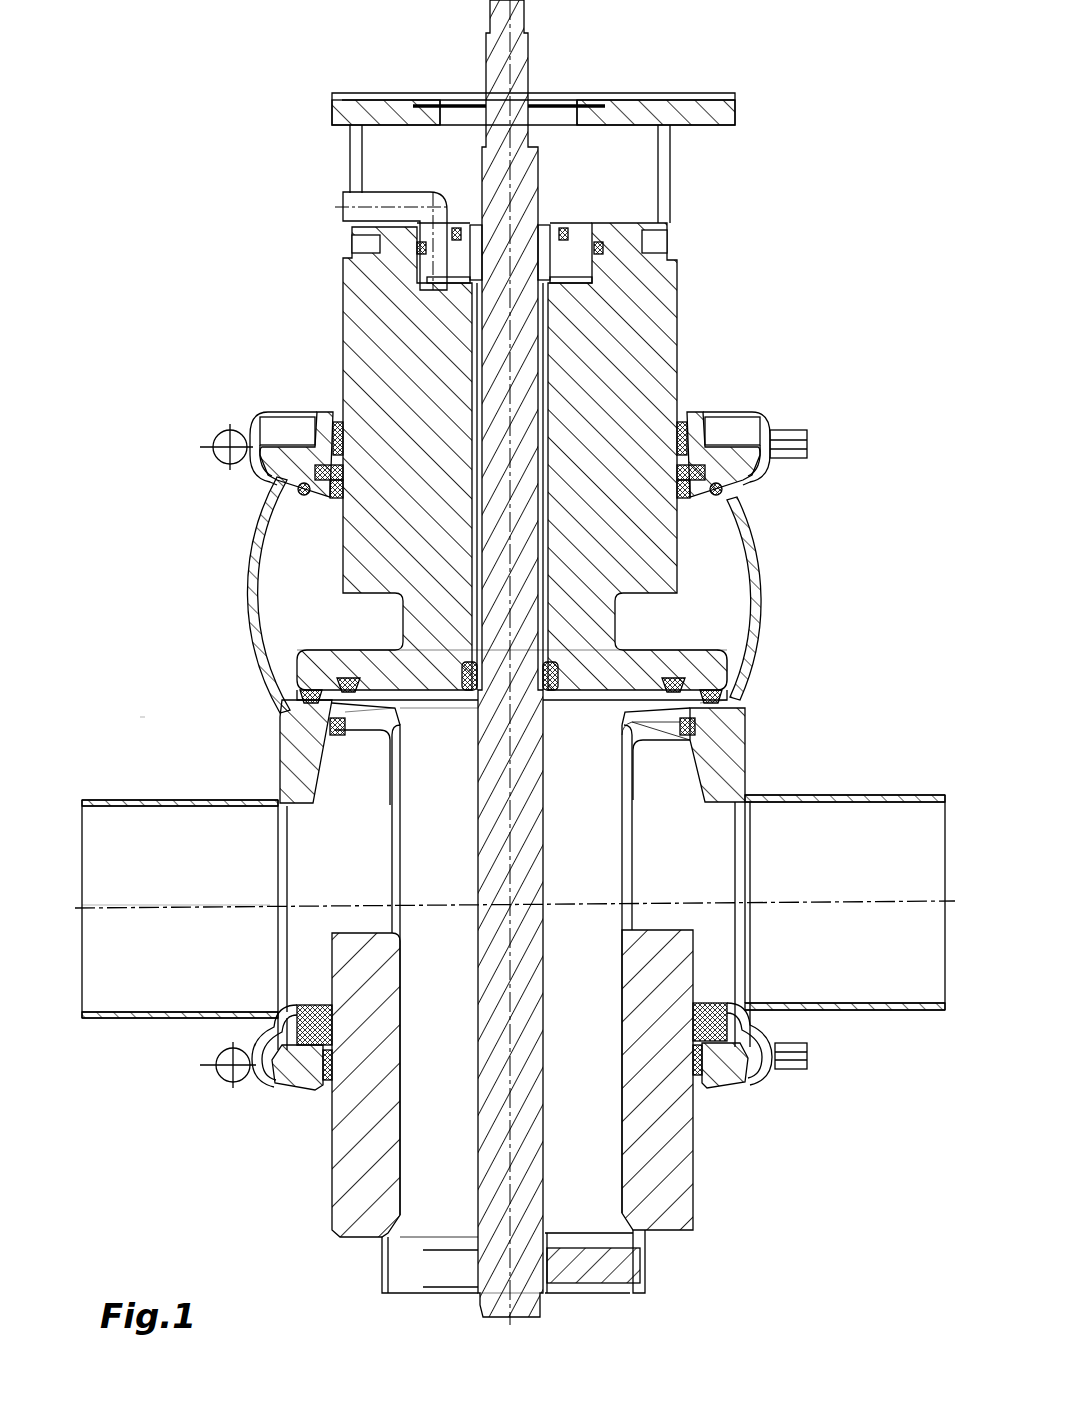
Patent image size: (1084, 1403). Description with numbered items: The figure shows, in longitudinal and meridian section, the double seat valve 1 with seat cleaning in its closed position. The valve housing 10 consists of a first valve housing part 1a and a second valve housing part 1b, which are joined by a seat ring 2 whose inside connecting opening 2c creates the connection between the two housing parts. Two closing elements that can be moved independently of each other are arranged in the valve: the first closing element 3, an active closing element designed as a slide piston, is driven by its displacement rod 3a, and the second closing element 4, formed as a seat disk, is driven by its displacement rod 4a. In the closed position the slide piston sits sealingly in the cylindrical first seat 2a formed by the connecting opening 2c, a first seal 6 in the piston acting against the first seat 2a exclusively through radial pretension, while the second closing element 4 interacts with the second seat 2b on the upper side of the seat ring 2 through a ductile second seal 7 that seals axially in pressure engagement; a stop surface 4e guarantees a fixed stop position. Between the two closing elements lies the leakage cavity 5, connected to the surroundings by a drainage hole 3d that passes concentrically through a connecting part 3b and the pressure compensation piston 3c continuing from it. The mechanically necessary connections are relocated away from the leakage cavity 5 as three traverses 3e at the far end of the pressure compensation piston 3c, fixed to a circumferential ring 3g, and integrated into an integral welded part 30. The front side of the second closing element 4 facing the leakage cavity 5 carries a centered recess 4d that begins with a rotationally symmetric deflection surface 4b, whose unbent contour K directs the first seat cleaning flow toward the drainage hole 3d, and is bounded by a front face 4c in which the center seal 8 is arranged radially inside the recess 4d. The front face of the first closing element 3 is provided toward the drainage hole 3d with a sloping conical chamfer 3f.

The double seat valve 1 is at (140, 716).
The first valve housing part 1a is at (282, 955).
The second valve housing part 1b is at (262, 538).
The seat ring 2 is at (303, 748).
The first seat 2a is at (340, 723).
The second seat 2b is at (735, 668).
The connecting opening 2c is at (661, 770).
The first closing element 3 is at (712, 760).
The displacement rod 3a is at (510, 358).
The connecting part 3b is at (397, 853).
The pressure compensation piston 3c is at (362, 1122).
The drainage hole 3d is at (439, 1156).
The traverses 3e is at (587, 1263).
The sloping conical chamfer 3f is at (662, 727).
The circumferential ring 3g is at (385, 1262).
The second closing element 4 is at (708, 662).
The displacement rod 4a is at (622, 303).
The deflection surface 4b is at (703, 684).
The front face 4c is at (670, 707).
The centered recess 4d is at (628, 693).
The stop surface 4e is at (692, 706).
The leakage cavity 5 is at (439, 730).
The first seal 6 is at (340, 735).
The second seal 7 is at (310, 694).
The center seal 8 is at (348, 680).
The valve housing 10 is at (265, 773).
The integral welded part 30 is at (688, 1259).
The contour K is at (382, 727).